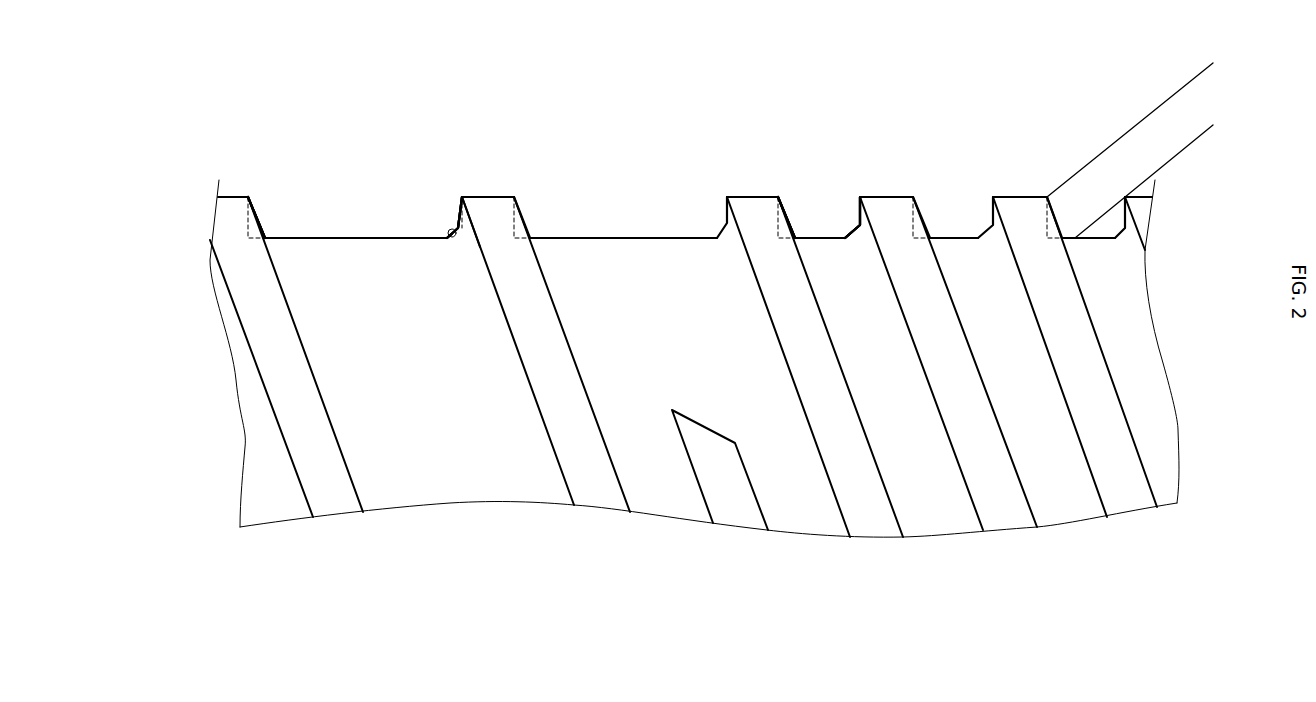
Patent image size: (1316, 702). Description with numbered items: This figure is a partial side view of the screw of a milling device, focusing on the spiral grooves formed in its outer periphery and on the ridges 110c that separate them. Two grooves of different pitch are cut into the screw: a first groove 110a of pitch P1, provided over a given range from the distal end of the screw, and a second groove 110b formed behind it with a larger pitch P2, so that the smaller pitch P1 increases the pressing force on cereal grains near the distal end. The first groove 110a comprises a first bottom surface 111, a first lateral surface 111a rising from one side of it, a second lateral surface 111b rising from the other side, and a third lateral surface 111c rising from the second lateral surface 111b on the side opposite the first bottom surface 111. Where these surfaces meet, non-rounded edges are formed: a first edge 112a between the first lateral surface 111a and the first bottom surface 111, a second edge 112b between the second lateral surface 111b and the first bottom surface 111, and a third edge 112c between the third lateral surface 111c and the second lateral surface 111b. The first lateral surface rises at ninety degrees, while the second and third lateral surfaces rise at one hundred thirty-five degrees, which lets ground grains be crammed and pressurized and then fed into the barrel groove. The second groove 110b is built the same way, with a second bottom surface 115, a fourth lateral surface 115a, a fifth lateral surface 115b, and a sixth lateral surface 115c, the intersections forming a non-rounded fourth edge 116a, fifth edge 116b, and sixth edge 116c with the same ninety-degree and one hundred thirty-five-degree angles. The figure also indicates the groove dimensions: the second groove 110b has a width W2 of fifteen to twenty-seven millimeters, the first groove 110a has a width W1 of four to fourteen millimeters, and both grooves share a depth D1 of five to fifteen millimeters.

The first groove 110a is at (824, 254).
The second groove 110b is at (644, 250).
The ridges 110c is at (752, 197).
The first bottom surface 111 is at (818, 236).
The first lateral surface 111a is at (793, 226).
The second lateral surface 111b is at (850, 239).
The third lateral surface 111c is at (866, 212).
The first edge 112a is at (782, 240).
The second edge 112b is at (846, 241).
The third edge 112c is at (863, 224).
The second bottom surface 115 is at (355, 237).
The fourth lateral surface 115a is at (258, 224).
The fifth lateral surface 115b is at (472, 228).
The sixth lateral surface 115c is at (455, 227).
The fourth edge 116a is at (250, 236).
The fifth edge 116b is at (452, 236).
The sixth edge 116c is at (463, 205).
The pitch of the first groove P1 is at (886, 130).
The pitch of the second groove P2 is at (753, 197).
The width of the first groove W1 is at (913, 173).
The width of the second groove W2 is at (514, 173).
The depth of the grooves D1 is at (1187, 85).